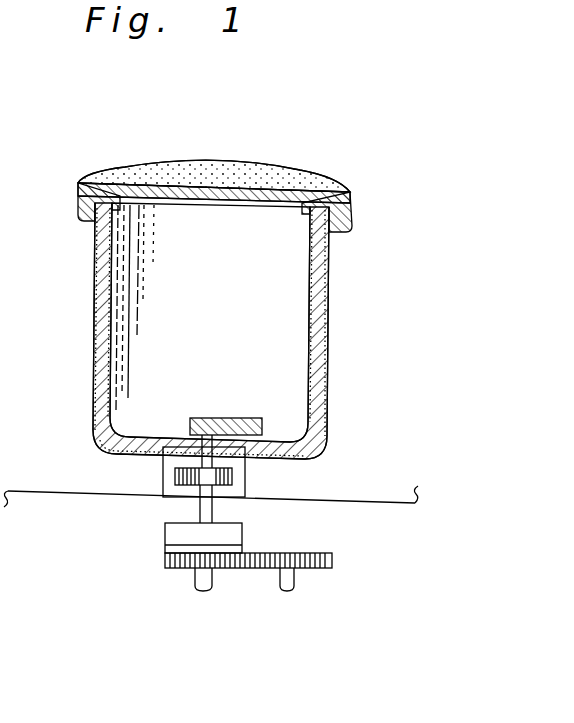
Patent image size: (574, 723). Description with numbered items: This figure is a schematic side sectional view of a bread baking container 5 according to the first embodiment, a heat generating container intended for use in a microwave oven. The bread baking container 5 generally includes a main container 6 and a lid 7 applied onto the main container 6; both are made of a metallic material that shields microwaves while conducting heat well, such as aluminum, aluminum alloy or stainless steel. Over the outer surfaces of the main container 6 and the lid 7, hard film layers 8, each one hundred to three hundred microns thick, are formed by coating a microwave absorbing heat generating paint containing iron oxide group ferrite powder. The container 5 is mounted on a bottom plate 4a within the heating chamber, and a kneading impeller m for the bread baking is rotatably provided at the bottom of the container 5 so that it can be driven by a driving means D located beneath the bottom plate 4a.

The bread baking container 5 is at (332, 388).
The main container 6 is at (112, 337).
The lid 7 is at (298, 192).
The hard film layers 8 is at (228, 164).
The kneading impeller m is at (238, 418).
The bottom plate 4a is at (392, 501).
The driving means D is at (255, 523).